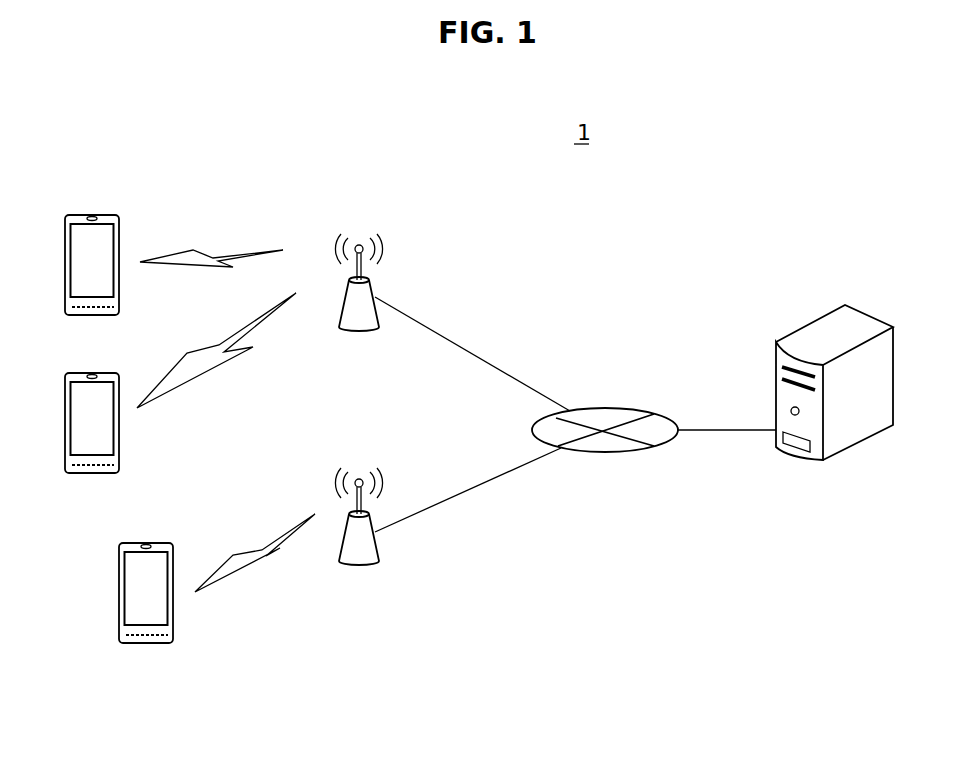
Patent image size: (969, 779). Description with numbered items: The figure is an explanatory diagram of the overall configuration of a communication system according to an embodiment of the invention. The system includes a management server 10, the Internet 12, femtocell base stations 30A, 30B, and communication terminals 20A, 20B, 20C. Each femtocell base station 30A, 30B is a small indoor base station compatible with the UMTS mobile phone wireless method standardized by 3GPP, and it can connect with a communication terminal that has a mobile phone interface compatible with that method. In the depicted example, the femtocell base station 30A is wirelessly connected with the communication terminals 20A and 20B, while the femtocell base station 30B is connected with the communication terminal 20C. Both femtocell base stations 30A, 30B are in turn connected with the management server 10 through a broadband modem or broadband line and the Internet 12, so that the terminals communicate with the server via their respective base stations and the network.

The management server 10 is at (809, 323).
The Internet 12 is at (601, 408).
The communication terminal 20A is at (91, 215).
The communication terminal 20B is at (91, 373).
The communication terminal 20C is at (146, 543).
The femtocell base station 30A is at (377, 292).
The femtocell base station 30B is at (380, 548).